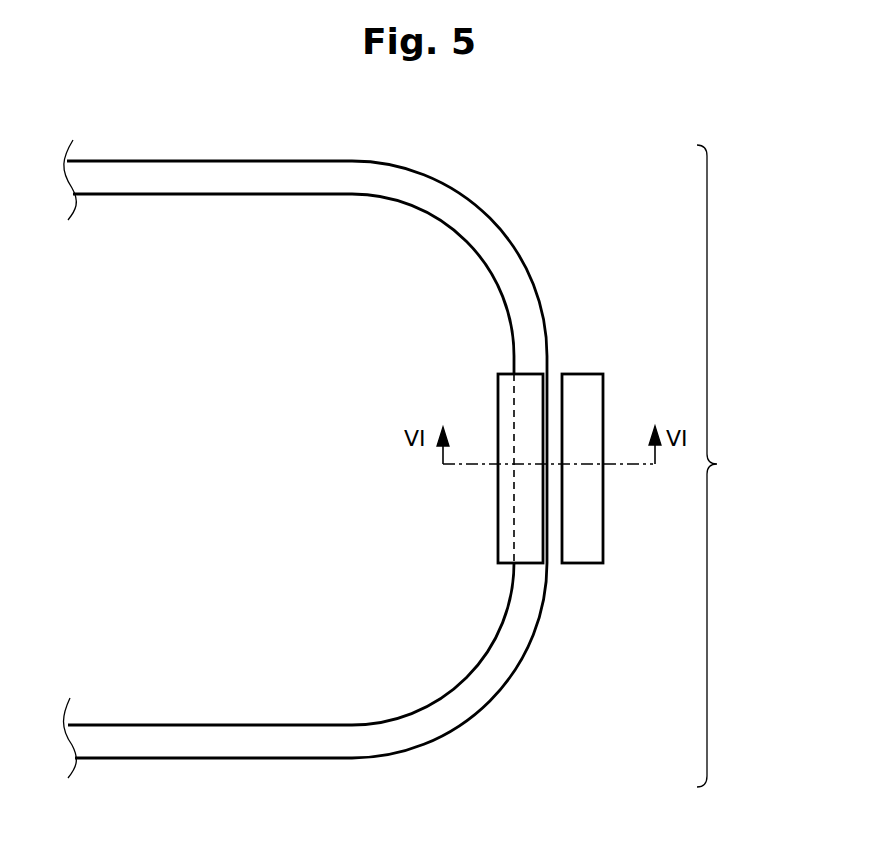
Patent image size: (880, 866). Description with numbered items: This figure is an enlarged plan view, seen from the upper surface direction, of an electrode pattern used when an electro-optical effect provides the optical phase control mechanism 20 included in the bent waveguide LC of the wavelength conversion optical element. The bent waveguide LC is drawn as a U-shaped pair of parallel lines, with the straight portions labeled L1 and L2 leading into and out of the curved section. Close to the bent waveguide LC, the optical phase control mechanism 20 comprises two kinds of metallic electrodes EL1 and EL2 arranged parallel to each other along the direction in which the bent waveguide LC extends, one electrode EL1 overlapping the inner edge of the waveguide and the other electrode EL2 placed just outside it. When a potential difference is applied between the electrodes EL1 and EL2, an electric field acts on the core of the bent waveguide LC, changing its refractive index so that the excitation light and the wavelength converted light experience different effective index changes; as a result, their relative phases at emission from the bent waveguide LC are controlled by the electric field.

The first lead wire L1 is at (244, 161).
The second lead wire L2 is at (228, 760).
The optical phase control mechanism 20 is at (503, 426).
The electrode EL1 is at (498, 388).
The electrode EL2 is at (584, 374).
The bent waveguide LC is at (726, 466).